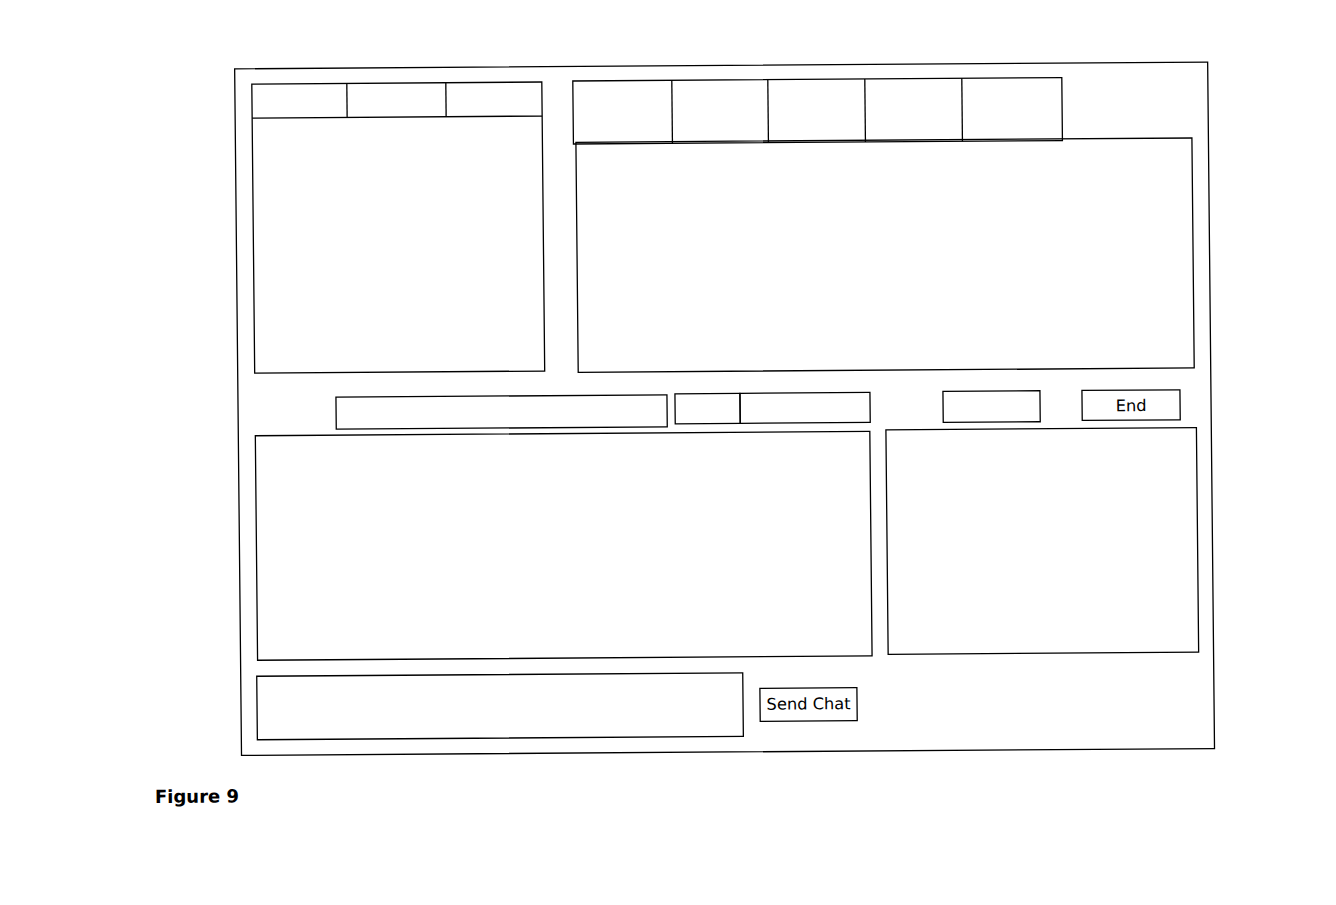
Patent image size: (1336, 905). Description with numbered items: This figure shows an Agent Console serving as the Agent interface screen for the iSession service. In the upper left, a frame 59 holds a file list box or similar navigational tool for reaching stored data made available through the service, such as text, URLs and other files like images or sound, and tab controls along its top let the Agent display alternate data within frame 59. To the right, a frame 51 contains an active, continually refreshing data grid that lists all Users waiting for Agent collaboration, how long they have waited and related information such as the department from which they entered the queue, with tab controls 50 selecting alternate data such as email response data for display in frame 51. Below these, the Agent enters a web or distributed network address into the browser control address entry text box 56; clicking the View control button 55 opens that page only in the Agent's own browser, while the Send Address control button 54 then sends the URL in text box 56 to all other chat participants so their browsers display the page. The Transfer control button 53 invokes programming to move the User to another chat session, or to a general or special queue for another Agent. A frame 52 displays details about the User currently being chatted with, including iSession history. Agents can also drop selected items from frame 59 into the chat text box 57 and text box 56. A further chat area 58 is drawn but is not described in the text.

The tab controls 50 is at (625, 80).
The frame 51 is at (1150, 241).
The frame 52 is at (1150, 530).
The Transfer control button 53 is at (990, 424).
The Send Address control button 54 is at (830, 424).
The View control button 55 is at (733, 424).
The browser control address entry text box 56 is at (480, 426).
The chat text box 57 is at (301, 722).
The chat transcript panel 58 is at (300, 530).
The frame 59 is at (300, 234).